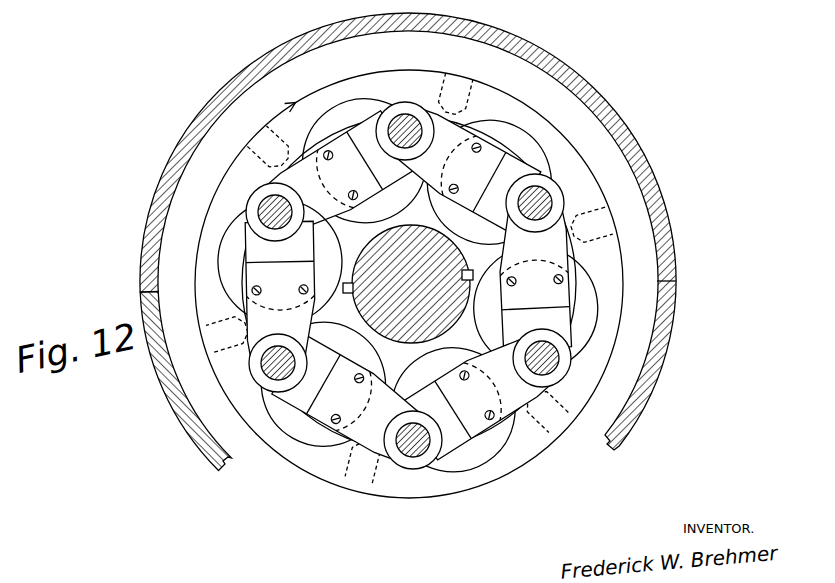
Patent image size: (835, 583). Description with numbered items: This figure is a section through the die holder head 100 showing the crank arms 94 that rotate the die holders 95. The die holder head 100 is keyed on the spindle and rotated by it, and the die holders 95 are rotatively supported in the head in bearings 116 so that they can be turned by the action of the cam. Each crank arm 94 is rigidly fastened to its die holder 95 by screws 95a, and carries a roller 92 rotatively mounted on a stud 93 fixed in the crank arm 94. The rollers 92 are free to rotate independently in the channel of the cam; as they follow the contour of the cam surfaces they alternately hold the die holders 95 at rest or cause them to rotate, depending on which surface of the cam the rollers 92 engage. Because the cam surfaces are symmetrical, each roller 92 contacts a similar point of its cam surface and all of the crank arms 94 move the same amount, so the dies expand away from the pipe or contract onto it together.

The rollers 92 is at (565, 198).
The studs 93 is at (555, 195).
The crank arms 94 is at (305, 165).
The die holders 95 is at (586, 318).
The screws 95a is at (327, 150).
The die holder head 100 is at (478, 102).
The bearings 116 is at (512, 155).